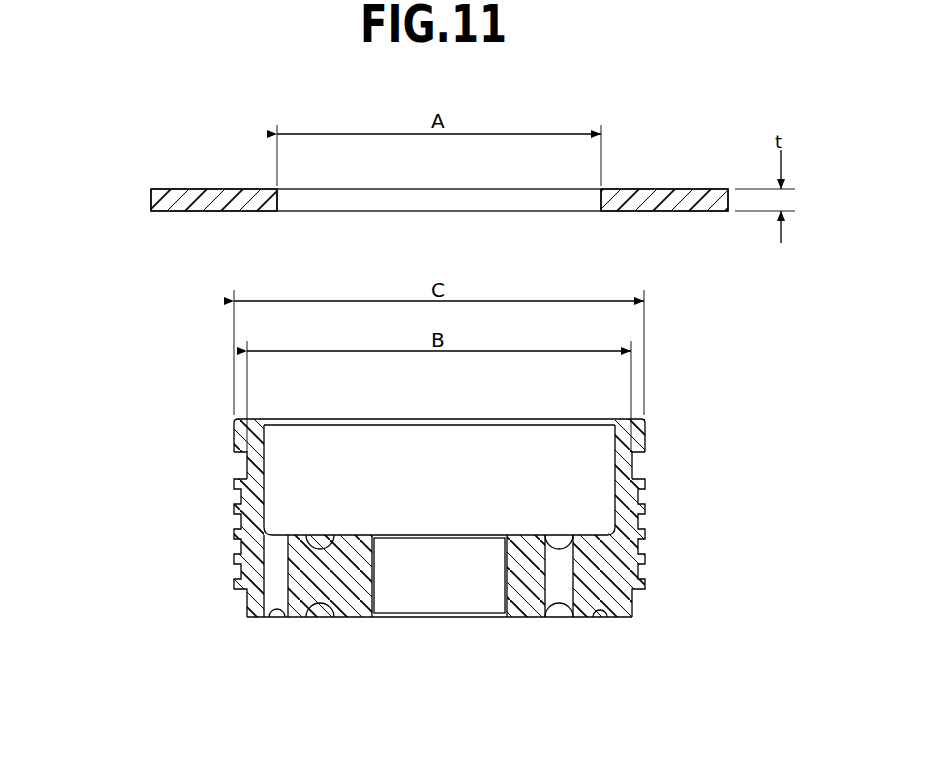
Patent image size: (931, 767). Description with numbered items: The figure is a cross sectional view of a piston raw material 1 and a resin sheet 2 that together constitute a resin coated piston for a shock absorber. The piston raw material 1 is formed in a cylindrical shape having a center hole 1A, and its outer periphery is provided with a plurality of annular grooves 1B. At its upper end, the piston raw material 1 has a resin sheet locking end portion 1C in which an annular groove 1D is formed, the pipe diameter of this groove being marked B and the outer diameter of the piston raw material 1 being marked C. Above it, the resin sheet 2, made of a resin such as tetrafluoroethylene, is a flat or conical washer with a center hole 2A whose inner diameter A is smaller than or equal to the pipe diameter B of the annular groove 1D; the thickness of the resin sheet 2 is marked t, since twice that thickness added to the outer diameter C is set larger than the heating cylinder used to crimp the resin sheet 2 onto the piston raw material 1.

The piston raw material 1 is at (435, 548).
The center hole 1A is at (374, 584).
The annular grooves 1B is at (238, 575).
The resin sheet locking end portion 1C is at (646, 440).
The annular groove 1D is at (634, 465).
The resin sheet 2 is at (398, 220).
The center hole 2A is at (278, 200).